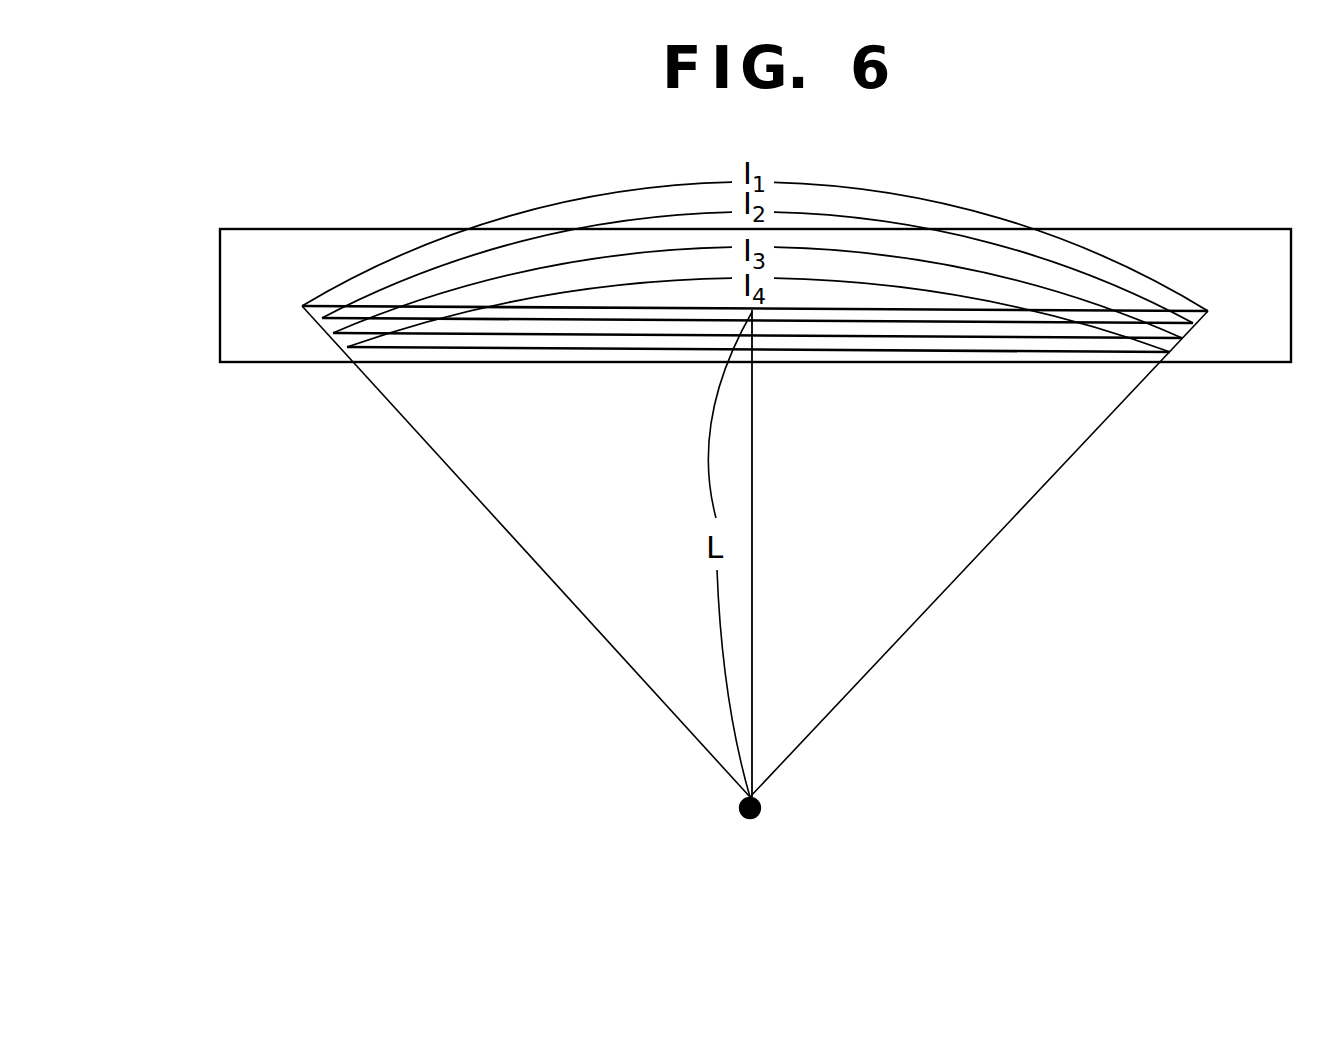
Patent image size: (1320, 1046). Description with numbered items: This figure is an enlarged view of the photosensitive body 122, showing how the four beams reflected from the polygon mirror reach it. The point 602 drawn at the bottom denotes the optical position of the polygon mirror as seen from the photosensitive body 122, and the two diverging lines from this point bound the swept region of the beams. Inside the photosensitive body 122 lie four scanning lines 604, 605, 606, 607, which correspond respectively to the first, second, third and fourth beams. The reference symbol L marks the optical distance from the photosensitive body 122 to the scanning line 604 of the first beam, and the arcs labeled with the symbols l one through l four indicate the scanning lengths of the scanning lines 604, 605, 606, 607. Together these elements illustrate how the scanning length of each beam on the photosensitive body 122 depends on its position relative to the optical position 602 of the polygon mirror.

The photosensitive body 122 is at (1237, 258).
The optical position of the polygon mirror 602 is at (753, 819).
The scanning line of the first beam 604 is at (1007, 313).
The scanning line of the second beam 605 is at (947, 325).
The scanning line of the third beam 606 is at (878, 338).
The scanning line of the fourth beam 607 is at (807, 351).